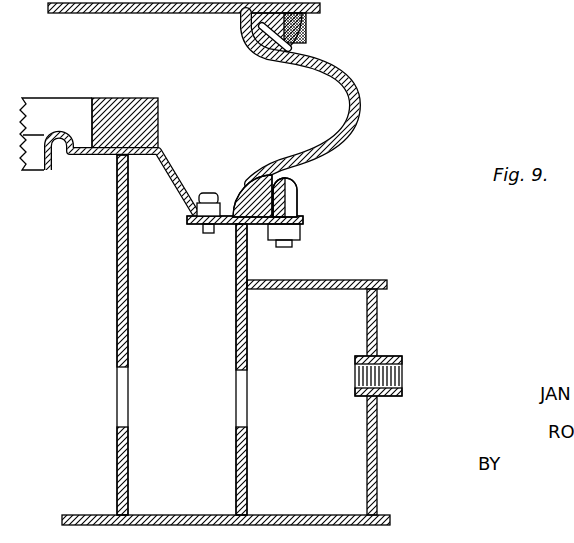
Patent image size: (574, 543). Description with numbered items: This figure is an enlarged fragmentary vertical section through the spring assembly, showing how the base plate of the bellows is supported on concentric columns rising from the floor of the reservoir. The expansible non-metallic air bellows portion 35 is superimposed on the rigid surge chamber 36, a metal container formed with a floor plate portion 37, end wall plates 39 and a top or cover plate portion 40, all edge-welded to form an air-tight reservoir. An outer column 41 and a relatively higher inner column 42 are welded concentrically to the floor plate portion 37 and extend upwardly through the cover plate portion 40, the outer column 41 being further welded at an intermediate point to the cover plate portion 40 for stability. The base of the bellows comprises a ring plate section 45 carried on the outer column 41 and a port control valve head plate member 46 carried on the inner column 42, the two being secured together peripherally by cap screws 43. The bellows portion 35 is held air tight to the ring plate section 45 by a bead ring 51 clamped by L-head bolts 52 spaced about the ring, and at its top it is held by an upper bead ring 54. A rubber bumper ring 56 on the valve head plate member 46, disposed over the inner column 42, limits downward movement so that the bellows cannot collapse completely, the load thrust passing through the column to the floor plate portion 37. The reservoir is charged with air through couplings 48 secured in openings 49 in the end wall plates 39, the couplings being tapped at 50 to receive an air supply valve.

The air bellows portion 35 is at (360, 95).
The surge chamber 36 is at (181, 435).
The floor plate portion 37 is at (320, 500).
The end wall plates 39 is at (366, 432).
The cover plate portion 40 is at (362, 280).
The outer column 41 is at (249, 333).
The inner column 42 is at (117, 326).
The cap screws 43 is at (222, 178).
The ring plate section 45 is at (305, 220).
The port control valve head plate member 46 is at (58, 140).
The couplings 48 is at (398, 362).
The openings 49 is at (385, 360).
The tapped portion 50 is at (385, 394).
The bead ring 51 is at (265, 170).
The L-head bolts 52 is at (292, 190).
The bead ring 54 is at (306, 42).
The rubber bumper ring 56 is at (127, 84).